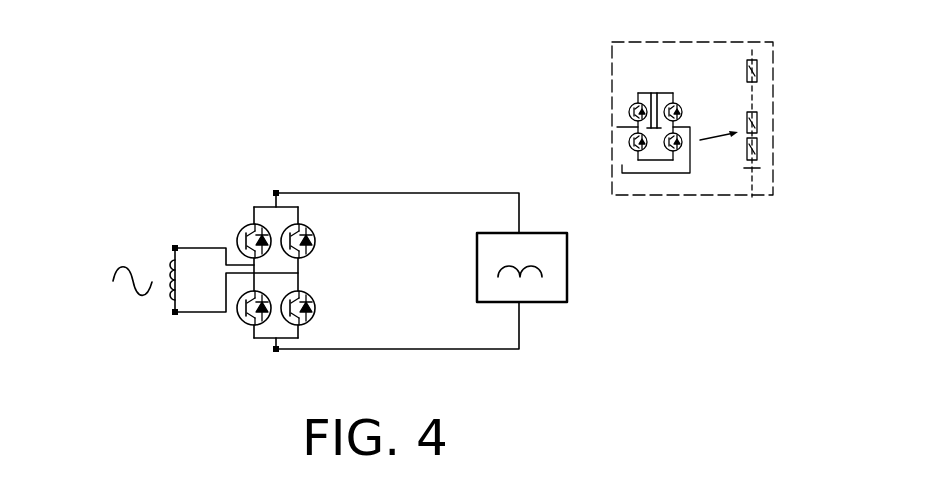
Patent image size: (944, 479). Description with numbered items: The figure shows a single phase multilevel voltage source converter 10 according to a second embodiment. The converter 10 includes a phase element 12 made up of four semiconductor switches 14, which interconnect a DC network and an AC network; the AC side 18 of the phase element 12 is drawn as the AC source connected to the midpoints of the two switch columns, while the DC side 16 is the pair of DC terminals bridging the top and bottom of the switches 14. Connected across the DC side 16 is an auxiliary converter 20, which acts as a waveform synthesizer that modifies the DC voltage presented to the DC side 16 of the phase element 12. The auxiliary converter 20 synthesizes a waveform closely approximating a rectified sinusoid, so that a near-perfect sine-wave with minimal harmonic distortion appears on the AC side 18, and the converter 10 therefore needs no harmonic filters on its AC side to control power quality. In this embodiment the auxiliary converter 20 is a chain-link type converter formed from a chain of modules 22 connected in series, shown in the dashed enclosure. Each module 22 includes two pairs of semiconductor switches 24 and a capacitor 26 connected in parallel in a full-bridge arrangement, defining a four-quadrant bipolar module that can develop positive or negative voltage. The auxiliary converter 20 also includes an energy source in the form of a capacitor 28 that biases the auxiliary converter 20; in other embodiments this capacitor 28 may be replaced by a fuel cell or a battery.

The single phase multilevel voltage source converter 10 is at (242, 188).
The phase element 12 is at (308, 204).
The semiconductor switch 14 is at (240, 224).
The DC side 16 is at (289, 192).
The AC side 18 is at (180, 316).
The auxiliary converter 20 is at (543, 302).
The module 22 is at (757, 73).
The semiconductor switch 24 is at (630, 104).
The capacitor 26 is at (650, 93).
The capacitor 28 is at (752, 172).